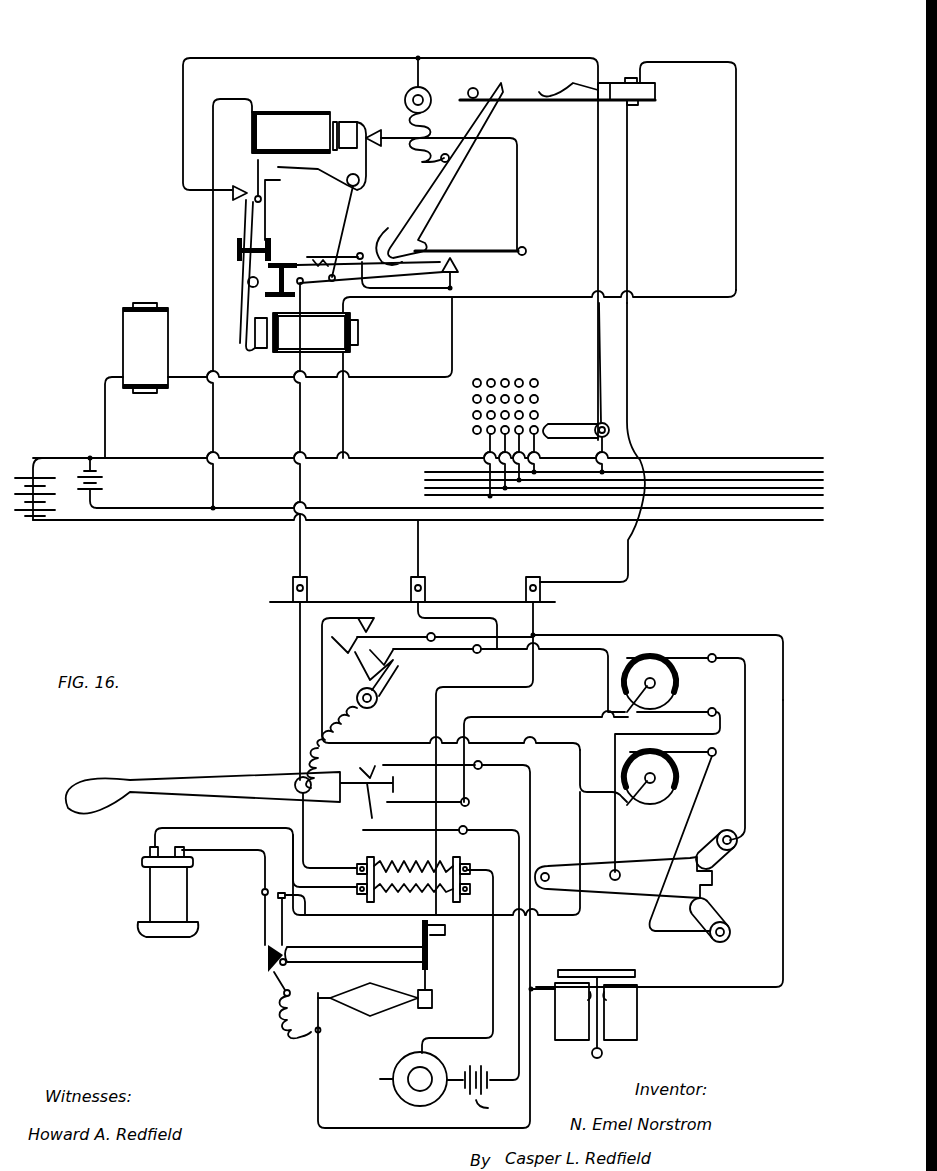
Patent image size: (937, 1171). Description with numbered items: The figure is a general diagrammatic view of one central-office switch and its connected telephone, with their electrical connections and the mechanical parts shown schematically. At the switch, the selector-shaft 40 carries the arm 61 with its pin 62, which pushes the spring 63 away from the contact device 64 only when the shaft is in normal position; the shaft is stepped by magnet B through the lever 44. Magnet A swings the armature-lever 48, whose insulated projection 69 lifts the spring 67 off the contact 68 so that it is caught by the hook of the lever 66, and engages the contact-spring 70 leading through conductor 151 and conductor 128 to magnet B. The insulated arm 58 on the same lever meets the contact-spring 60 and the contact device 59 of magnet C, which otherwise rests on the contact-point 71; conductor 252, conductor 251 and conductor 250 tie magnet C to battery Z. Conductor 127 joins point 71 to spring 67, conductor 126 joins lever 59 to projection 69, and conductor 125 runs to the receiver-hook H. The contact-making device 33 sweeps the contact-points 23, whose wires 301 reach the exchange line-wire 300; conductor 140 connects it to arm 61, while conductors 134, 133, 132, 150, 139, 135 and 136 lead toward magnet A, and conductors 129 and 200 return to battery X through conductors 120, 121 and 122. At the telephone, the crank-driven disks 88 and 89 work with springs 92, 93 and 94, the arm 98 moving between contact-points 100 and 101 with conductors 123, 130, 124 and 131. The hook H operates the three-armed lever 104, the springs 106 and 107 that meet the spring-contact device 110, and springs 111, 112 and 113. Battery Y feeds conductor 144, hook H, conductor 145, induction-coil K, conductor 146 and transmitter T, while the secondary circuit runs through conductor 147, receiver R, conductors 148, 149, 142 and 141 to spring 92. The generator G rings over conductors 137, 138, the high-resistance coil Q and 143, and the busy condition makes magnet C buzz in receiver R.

The conductor 140 is at (598, 358).
The conductor 135 is at (734, 204).
The conductor 134 is at (628, 556).
The shaft 40 is at (412, 101).
The arm 61 is at (445, 92).
The pin 62 is at (477, 88).
The lever 66 is at (438, 197).
The projection 69 is at (380, 256).
The spring 63 is at (530, 104).
The contact device 64 is at (568, 86).
The contact-point 71 is at (384, 130).
The conductor 127 is at (518, 165).
The spring 67 is at (494, 250).
The contact 68 is at (460, 268).
The contact device 59 is at (338, 184).
The conductor 126 is at (342, 209).
The conductor 252 is at (257, 163).
The contact-spring 60 is at (242, 200).
The arm 58 is at (267, 216).
The armature-lever 48 is at (242, 310).
The conductor 251 is at (211, 248).
The lever 44 is at (247, 283).
The contact-spring 70 is at (322, 258).
The conductor 151 is at (432, 300).
The conductor 128 is at (453, 329).
The conductor 136 is at (344, 425).
The conductor 129 is at (106, 434).
The conductor 125 is at (299, 412).
The conductor 200 is at (280, 459).
The conductor 250 is at (194, 510).
The conductor 120 is at (122, 524).
The line-wire 300 is at (786, 476).
The contact-points 23 is at (472, 403).
The wires 301 is at (490, 440).
The contact-making device 33 is at (582, 426).
The conductor 121 is at (420, 556).
The spring-contact device 110 is at (366, 618).
The conductor 133 is at (543, 616).
The conductor 132 is at (513, 632).
The conductor 139 is at (705, 987).
The spring-contact 107 is at (414, 636).
The spring-contact 106 is at (400, 654).
The three-armed lever 104 is at (380, 683).
The conductor 150 is at (438, 700).
The conductor 122 is at (590, 649).
The disk 88 is at (630, 694).
The spring 93 is at (692, 656).
The contact-spring 92 is at (684, 712).
The conductor 124 is at (570, 722).
The conductor 131 is at (552, 742).
The disk 89 is at (644, 804).
The spring 94 is at (700, 752).
The conductor 123 is at (748, 784).
The contact-point 101 is at (730, 860).
The contact-point 100 is at (726, 915).
The arm 98 is at (644, 890).
The conductor 130 is at (680, 840).
The conductor 141 is at (579, 830).
The contact-spring 111 is at (386, 762).
The contact-making spring 112 is at (430, 800).
The contact-making spring 113 is at (420, 830).
The conductor 138 is at (529, 808).
The conductor 145 is at (305, 838).
The conductor 147 is at (240, 830).
The conductor 148 is at (256, 858).
The conductor 149 is at (262, 924).
The conductor 142 is at (286, 932).
The conductor 143 is at (410, 948).
The conductor 137 is at (320, 1016).
The conductor 146 is at (492, 1018).
The conductor 144 is at (528, 1054).
The magnet A is at (315, 332).
The magnet B is at (145, 348).
The magnet C is at (285, 144).
The receiver-hook H is at (229, 795).
The induction-coil K is at (424, 858).
The receiver R is at (168, 892).
The generator G is at (375, 993).
The transmitter T is at (407, 1079).
The battery Y is at (476, 1091).
The high-resistance coil Q is at (584, 1014).
The battery X is at (35, 481).
The battery Z is at (98, 482).